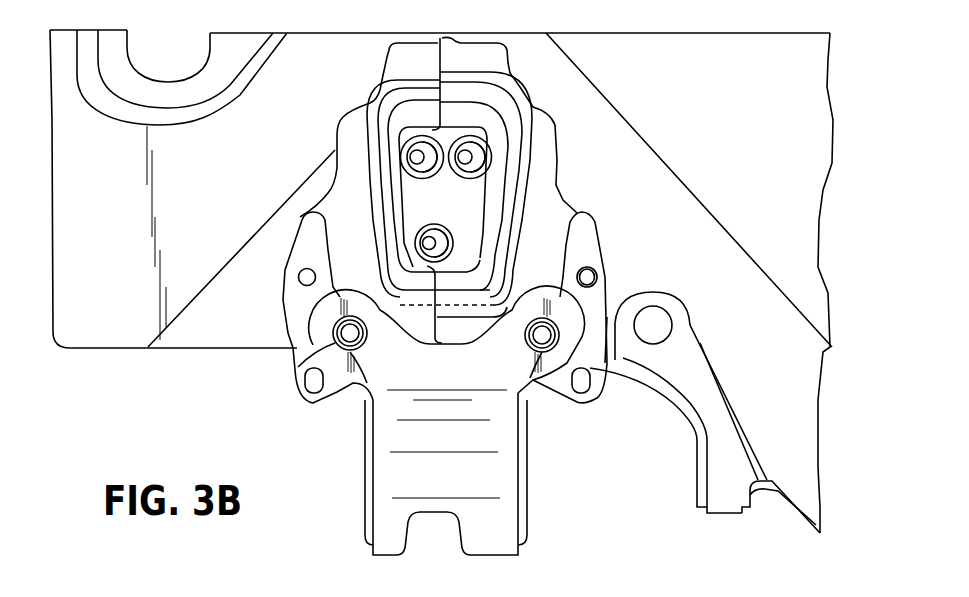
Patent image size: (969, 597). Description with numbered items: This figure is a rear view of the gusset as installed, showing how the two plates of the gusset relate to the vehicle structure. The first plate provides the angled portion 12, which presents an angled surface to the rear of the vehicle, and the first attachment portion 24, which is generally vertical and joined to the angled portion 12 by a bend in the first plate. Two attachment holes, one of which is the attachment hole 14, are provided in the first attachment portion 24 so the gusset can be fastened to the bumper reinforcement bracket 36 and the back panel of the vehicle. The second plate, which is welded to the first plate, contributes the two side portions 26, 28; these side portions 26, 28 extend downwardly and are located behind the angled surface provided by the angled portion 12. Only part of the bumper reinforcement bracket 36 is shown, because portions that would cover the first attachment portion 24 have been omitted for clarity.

The angled portion 12 is at (455, 472).
The attachment hole 14 is at (295, 392).
The first attachment portion 24 is at (523, 387).
The side portion 26 is at (378, 520).
The side portion 28 is at (520, 487).
The bumper reinforcement bracket 36 is at (297, 308).